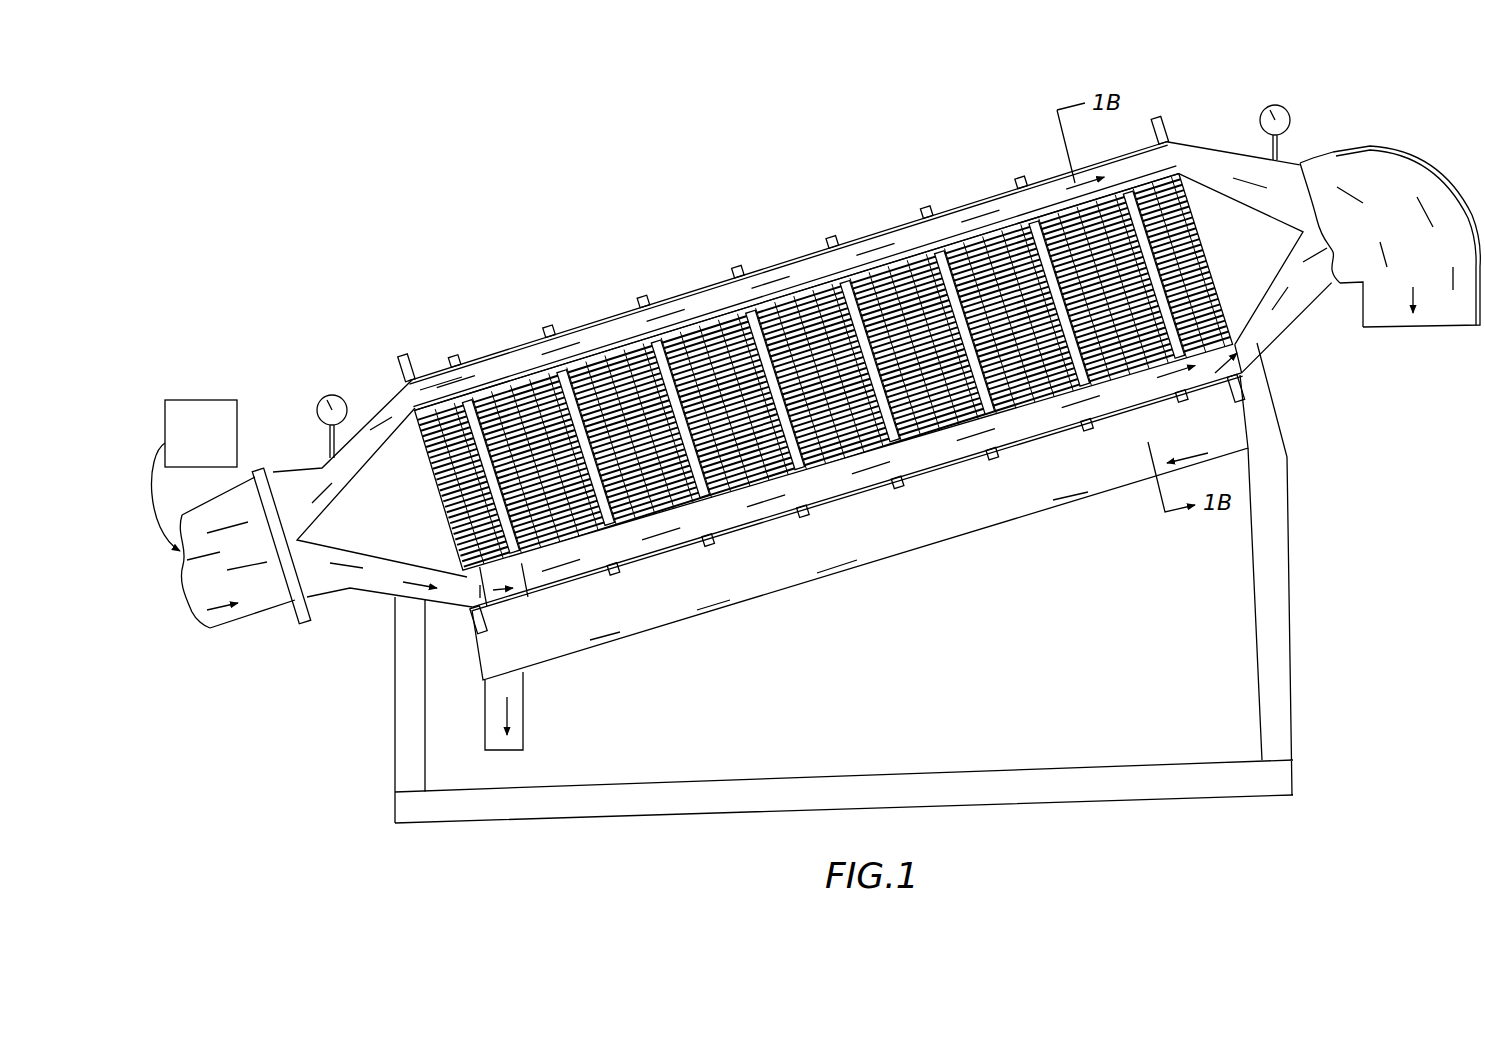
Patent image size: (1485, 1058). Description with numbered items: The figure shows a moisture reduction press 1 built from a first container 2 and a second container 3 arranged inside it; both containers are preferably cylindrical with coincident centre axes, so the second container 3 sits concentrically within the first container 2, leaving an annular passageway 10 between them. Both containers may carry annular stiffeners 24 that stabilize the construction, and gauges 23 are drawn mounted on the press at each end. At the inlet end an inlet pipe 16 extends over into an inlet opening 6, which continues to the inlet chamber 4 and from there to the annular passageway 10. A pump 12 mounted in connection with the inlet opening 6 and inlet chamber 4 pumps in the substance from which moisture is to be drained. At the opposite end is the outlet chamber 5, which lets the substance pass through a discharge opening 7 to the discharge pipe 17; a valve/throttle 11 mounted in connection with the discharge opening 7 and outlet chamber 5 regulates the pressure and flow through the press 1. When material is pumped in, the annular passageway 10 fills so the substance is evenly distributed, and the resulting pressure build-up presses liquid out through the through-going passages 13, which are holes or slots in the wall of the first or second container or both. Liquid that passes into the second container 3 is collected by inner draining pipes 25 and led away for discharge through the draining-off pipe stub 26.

The moisture reduction press 1 is at (859, 192).
The first container 2 is at (597, 298).
The second container 3 is at (497, 370).
The inlet chamber 4 is at (340, 592).
The outlet chamber 5 is at (1262, 330).
The inlet opening 6 is at (287, 605).
The discharge opening 7 is at (1320, 168).
The annular passageway 10 is at (476, 372).
The valve/throttle 11 is at (1335, 297).
The pump 12 is at (215, 400).
The through-going passages 13 is at (680, 290).
The inlet pipe 16 is at (218, 630).
The discharge pipe 17 is at (1440, 327).
The pressure gauge 23 is at (332, 395).
The annular stiffeners 24 is at (743, 266).
The inner draining pipes 25 is at (1003, 423).
The draining-off pipe stub 26 is at (522, 727).